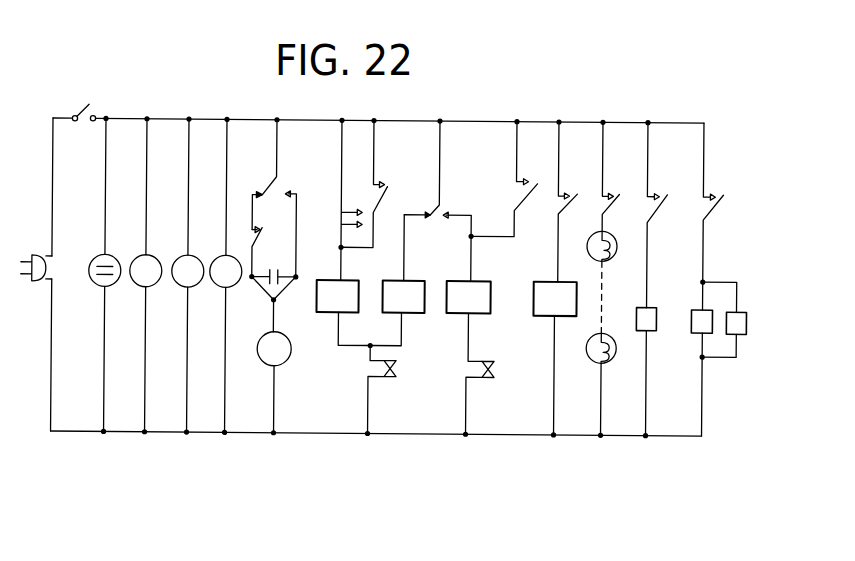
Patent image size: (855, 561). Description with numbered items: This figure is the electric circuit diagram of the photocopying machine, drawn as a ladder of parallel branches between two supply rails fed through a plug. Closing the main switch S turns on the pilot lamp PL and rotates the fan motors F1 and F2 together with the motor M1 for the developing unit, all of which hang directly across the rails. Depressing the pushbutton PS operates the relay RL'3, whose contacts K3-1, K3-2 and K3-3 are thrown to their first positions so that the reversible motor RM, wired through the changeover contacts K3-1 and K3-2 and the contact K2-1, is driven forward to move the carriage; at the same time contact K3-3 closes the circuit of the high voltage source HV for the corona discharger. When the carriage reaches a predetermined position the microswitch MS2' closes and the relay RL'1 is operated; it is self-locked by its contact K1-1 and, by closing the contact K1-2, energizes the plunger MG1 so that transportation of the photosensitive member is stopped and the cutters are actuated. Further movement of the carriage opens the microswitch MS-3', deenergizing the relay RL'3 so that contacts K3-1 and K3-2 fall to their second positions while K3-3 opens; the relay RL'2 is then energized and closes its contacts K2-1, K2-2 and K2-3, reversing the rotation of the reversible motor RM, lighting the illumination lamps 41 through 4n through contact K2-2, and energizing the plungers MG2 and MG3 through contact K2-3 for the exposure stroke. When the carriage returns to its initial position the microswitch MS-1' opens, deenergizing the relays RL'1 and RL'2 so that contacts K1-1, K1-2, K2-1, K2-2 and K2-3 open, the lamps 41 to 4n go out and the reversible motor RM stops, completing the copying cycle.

The main switch S is at (83, 103).
The pilot lamp PL is at (91, 282).
The fan motor F1 is at (146, 275).
The fan motor F2 is at (188, 275).
The motor for the developing unit M1 is at (226, 275).
The contact K3-2 is at (287, 199).
The contact K2-1 is at (274, 279).
The reversible motor RM is at (274, 382).
The microswitch MS-2' MS2' is at (332, 200).
The contact K1-1 is at (379, 184).
The relay RL'1 is at (343, 312).
The relay RL'2 is at (397, 280).
The relay RL'3 is at (468, 321).
The microswitch MS-1' is at (407, 388).
The microswitch MS-3' is at (506, 398).
The contact K3-1 is at (443, 201).
The pushbutton PS is at (507, 179).
The contact K3-3 is at (579, 202).
The high voltage source HV is at (555, 358).
The contact K2-2 is at (623, 176).
The illumination lamp 41 is at (614, 282).
The illumination lamp 4n is at (613, 356).
The contact K1-2 is at (668, 215).
The plunger MG1 is at (658, 316).
The contact K2-3 is at (722, 279).
The plunger MG2 is at (693, 318).
The plunger MG3 is at (748, 322).